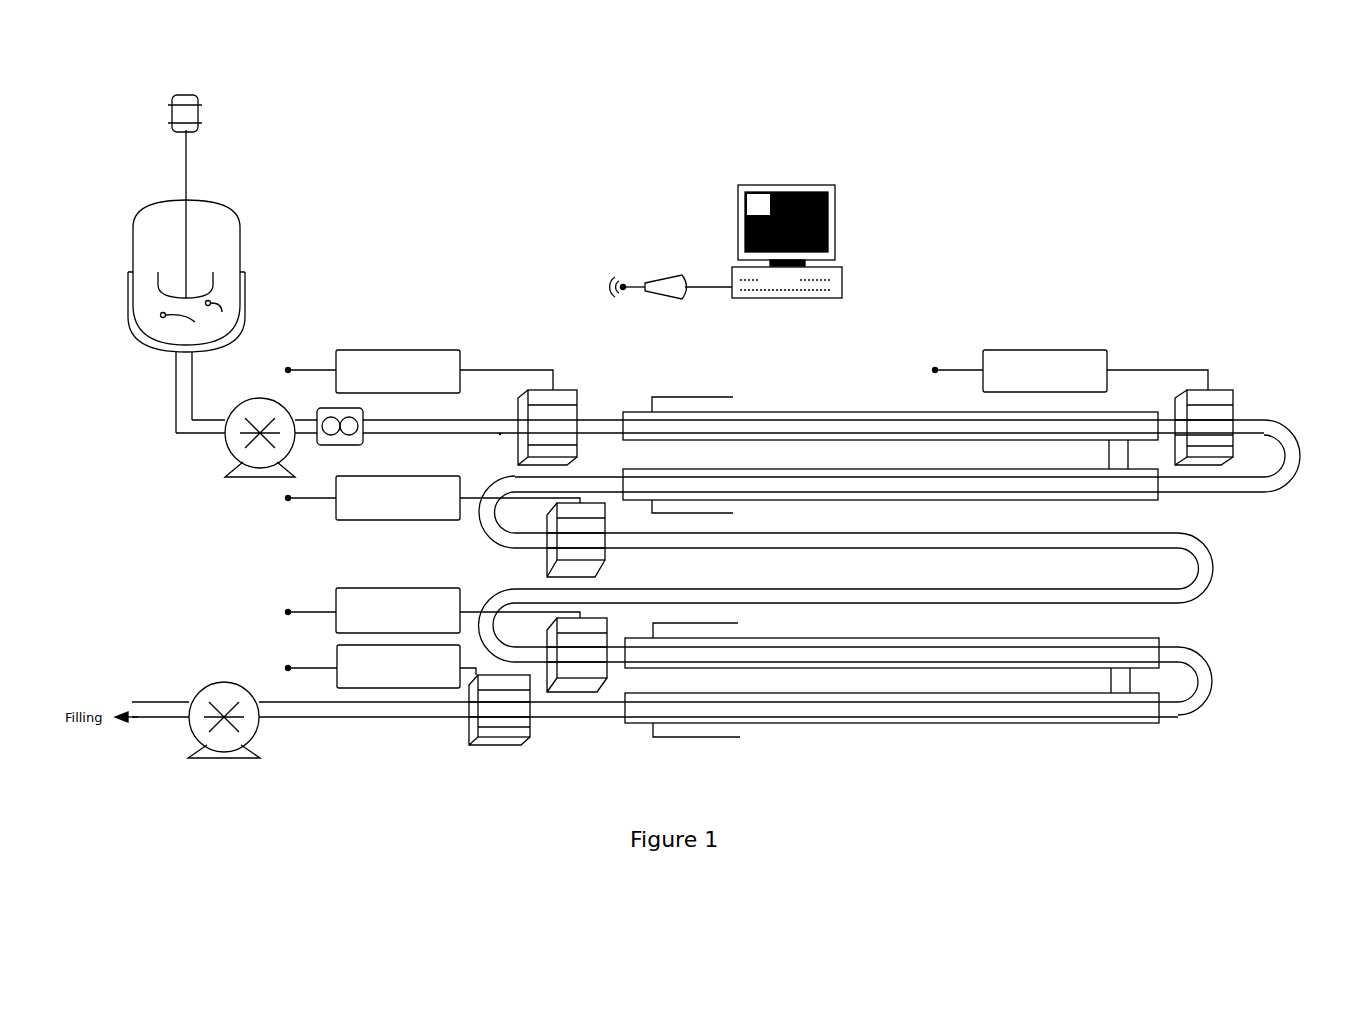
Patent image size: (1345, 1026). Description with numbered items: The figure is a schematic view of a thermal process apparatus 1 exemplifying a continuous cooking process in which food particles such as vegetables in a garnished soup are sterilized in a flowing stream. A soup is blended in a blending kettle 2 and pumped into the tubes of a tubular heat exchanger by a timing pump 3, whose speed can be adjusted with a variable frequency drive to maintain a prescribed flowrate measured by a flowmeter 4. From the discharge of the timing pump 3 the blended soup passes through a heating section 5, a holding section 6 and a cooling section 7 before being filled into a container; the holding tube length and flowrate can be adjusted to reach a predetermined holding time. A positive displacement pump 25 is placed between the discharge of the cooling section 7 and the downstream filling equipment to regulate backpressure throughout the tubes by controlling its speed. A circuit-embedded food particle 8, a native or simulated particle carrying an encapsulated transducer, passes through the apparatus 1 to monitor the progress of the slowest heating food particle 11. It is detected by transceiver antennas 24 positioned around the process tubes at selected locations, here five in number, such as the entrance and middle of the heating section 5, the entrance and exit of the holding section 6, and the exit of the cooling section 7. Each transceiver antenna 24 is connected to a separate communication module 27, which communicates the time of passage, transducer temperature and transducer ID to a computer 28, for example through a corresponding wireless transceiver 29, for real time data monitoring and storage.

The apparatus 1 is at (1238, 229).
The blending kettle 2 is at (150, 343).
The timing pump 3 is at (232, 456).
The flowmeter 4 is at (363, 441).
The heating section 5 is at (1316, 449).
The holding section 6 is at (1228, 577).
The cooling section 7 is at (1234, 687).
The circuit-embedded food particle 8 is at (600, 440).
The slowest heating food particle 11 is at (448, 441).
The transceiver antenna 24 is at (577, 392).
The positive displacement pump 25 is at (195, 728).
The communication module 27 is at (432, 350).
The computer 28 is at (842, 280).
The wireless transceiver 29 is at (659, 276).